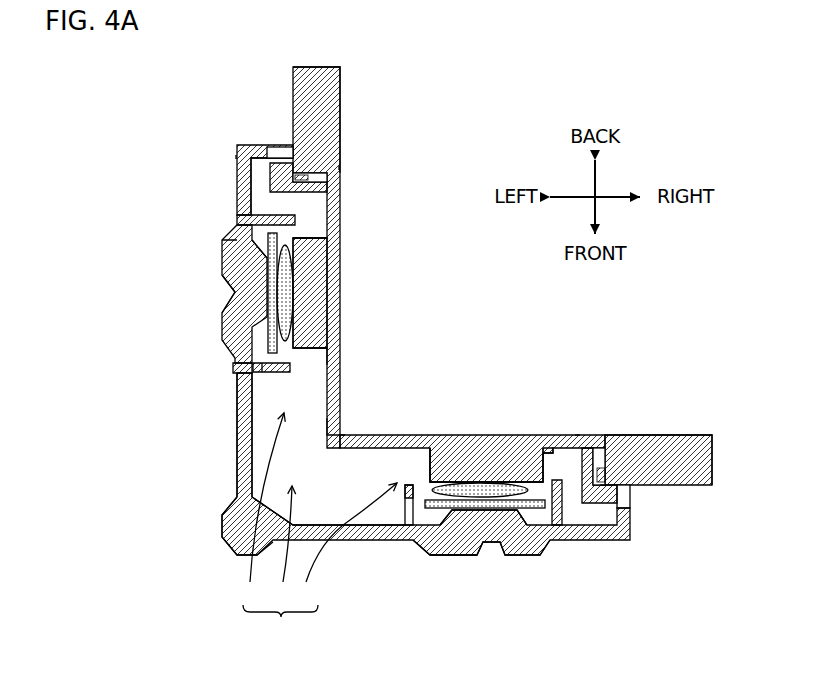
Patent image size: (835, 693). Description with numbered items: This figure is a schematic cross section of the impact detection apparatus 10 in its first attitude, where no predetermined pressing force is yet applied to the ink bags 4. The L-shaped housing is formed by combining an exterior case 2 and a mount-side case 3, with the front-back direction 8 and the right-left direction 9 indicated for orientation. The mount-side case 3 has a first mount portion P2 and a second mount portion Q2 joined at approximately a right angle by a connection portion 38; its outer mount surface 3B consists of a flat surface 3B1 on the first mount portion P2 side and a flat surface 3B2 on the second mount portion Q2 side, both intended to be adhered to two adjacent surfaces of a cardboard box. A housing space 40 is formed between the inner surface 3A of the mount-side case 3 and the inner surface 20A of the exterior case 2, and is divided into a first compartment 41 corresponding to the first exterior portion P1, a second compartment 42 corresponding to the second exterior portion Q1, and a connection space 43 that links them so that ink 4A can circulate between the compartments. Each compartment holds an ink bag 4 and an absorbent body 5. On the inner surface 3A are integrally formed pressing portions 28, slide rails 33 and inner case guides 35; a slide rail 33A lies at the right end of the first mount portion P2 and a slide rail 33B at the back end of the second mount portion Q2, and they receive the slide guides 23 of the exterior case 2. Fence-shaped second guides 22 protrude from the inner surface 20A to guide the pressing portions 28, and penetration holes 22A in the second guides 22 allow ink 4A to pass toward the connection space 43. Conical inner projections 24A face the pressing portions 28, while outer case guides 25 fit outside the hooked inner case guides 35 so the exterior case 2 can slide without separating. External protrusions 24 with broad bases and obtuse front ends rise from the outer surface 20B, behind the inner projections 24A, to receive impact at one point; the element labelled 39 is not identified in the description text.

The exterior case 2 is at (206, 486).
The mount-side case 3 is at (464, 321).
The inner surface 3A is at (321, 213).
The mount surface 3B is at (341, 283).
The surface 3B1 is at (486, 465).
The surface 3B2 is at (310, 293).
The ink bag 4 is at (287, 248).
The ink 4A is at (282, 308).
The absorbent body 5 is at (265, 338).
The front-back direction 8 is at (594, 181).
The right-left direction 9 is at (612, 193).
The impact detection apparatus 10 is at (315, 52).
The inner surface 20A is at (260, 420).
The outer surface 20B is at (237, 443).
The second guide 22 is at (257, 217).
The penetration hole 22A is at (268, 373).
The slide guide 23 is at (277, 146).
The external protrusion 24 is at (222, 266).
The inner projection 24A is at (245, 244).
The outer case guide 25 is at (297, 168).
The pressing portion 28 is at (319, 352).
The slide rail 33 is at (280, 94).
The slide rail 33A is at (658, 460).
The slide rail 33B is at (316, 120).
The inner case guide 35 is at (301, 180).
The connection portion 38 is at (345, 433).
The foot portion 39 is at (227, 548).
The housing space 40 is at (280, 621).
The first compartment 41 is at (345, 544).
The second compartment 42 is at (262, 509).
The connection space 43 is at (280, 546).
The first exterior portion P1 is at (603, 484).
The first mount portion P2 is at (577, 434).
The second exterior portion Q1 is at (237, 157).
The second mount portion Q2 is at (340, 168).